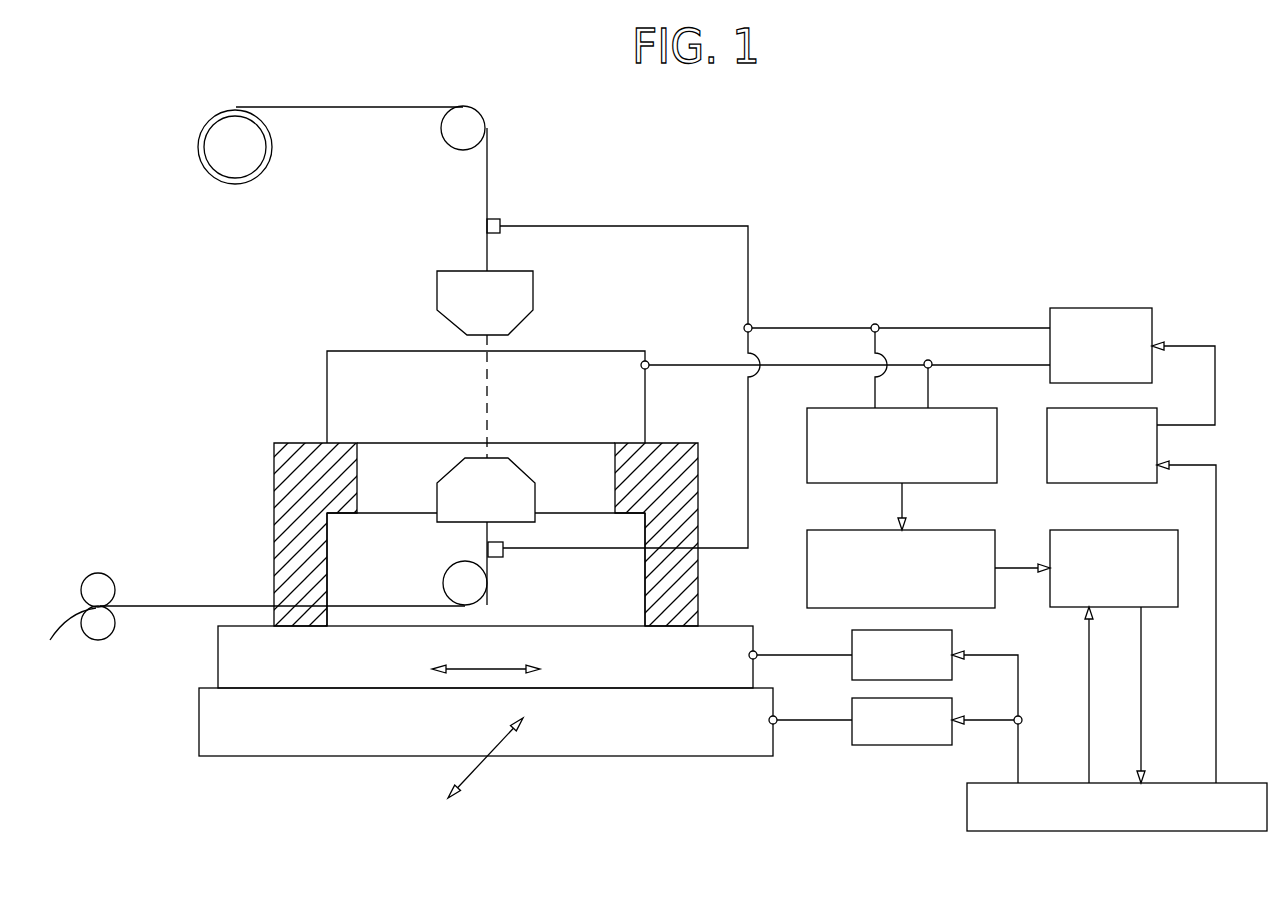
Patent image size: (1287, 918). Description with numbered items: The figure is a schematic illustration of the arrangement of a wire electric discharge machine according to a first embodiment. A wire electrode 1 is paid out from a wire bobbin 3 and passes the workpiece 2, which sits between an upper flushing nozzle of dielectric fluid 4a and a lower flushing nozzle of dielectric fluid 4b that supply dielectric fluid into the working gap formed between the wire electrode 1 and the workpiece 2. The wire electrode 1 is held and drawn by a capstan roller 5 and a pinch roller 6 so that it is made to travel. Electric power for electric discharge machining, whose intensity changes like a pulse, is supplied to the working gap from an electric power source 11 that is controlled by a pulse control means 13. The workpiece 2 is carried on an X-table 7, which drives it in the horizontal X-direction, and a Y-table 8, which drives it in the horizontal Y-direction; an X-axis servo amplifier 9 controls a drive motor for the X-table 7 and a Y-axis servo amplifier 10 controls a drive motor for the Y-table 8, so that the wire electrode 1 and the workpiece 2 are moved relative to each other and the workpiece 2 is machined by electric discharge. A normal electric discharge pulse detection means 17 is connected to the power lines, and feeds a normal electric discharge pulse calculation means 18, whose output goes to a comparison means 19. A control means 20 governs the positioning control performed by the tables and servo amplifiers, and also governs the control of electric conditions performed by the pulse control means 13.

The wire electrode 1 is at (487, 178).
The workpiece 2 is at (327, 392).
The wire bobbin 3 is at (198, 138).
The flushing nozzle of dielectric fluid 4a is at (437, 282).
The flushing nozzle of dielectric fluid 4b is at (437, 493).
The capstan roller 5 is at (98, 642).
The pinch roller 6 is at (98, 573).
The X-table 7 is at (218, 653).
The Y-table 8 is at (199, 720).
The X-axis servo amplifier 9 is at (852, 643).
The Y-axis servo amplifier 10 is at (868, 745).
The electric power source 11 is at (1100, 308).
The pulse control means 13 is at (1157, 438).
The normal electric discharge pulse detection means 17 is at (807, 450).
The normal electric discharge pulse calculation means 18 is at (807, 568).
The comparison means 19 is at (1150, 530).
The control means 20 is at (967, 815).